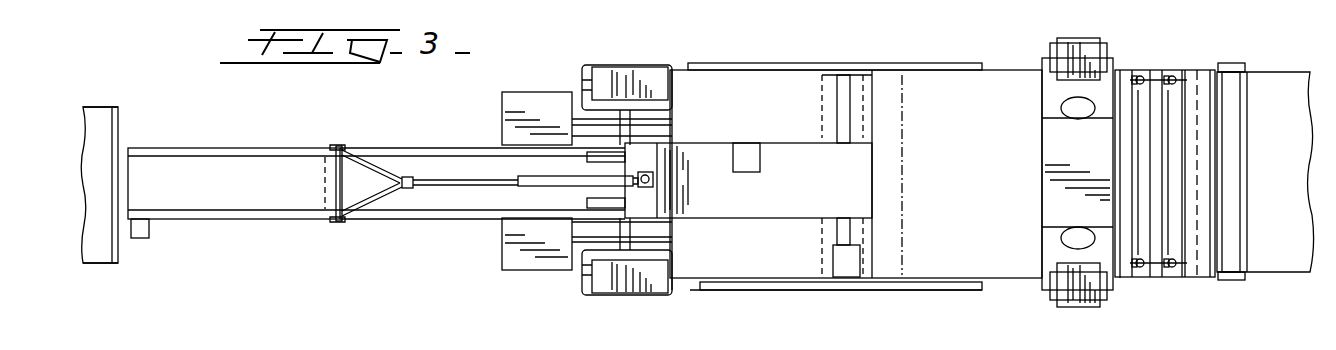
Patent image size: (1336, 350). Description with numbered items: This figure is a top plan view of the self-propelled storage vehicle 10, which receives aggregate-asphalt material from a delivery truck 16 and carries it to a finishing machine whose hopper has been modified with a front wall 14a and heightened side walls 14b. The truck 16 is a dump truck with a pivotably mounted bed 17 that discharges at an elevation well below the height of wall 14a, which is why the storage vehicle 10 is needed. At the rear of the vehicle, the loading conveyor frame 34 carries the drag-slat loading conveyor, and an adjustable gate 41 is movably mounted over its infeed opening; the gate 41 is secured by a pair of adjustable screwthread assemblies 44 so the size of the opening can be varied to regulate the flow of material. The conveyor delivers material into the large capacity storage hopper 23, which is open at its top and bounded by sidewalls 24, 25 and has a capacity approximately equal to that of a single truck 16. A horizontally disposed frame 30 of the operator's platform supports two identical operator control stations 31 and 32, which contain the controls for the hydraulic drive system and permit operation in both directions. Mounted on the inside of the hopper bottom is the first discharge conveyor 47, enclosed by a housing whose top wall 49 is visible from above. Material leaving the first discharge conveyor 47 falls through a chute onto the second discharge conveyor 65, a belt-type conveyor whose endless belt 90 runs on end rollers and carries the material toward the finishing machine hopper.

The storage vehicle 10 is at (918, 38).
The wall 14a is at (118, 130).
The side walls 14b is at (96, 104).
The delivery truck 16 is at (1281, 272).
The bed 17 is at (1282, 150).
The storage hopper 23 is at (960, 291).
The sidewall 24 is at (672, 296).
The sidewall 25 is at (680, 63).
The frame 30 is at (1105, 72).
The operator control station 31 is at (1072, 42).
The operator control station 32 is at (1088, 307).
The frame 34 is at (1010, 68).
The adjustable gate 41 is at (1192, 277).
The adjustable screwthread assemblies 44 is at (1165, 78).
The first discharge conveyor 47 is at (750, 132).
The top wall 49 is at (795, 170).
The second discharge conveyor 65 is at (329, 135).
The endless belt 90 is at (275, 193).